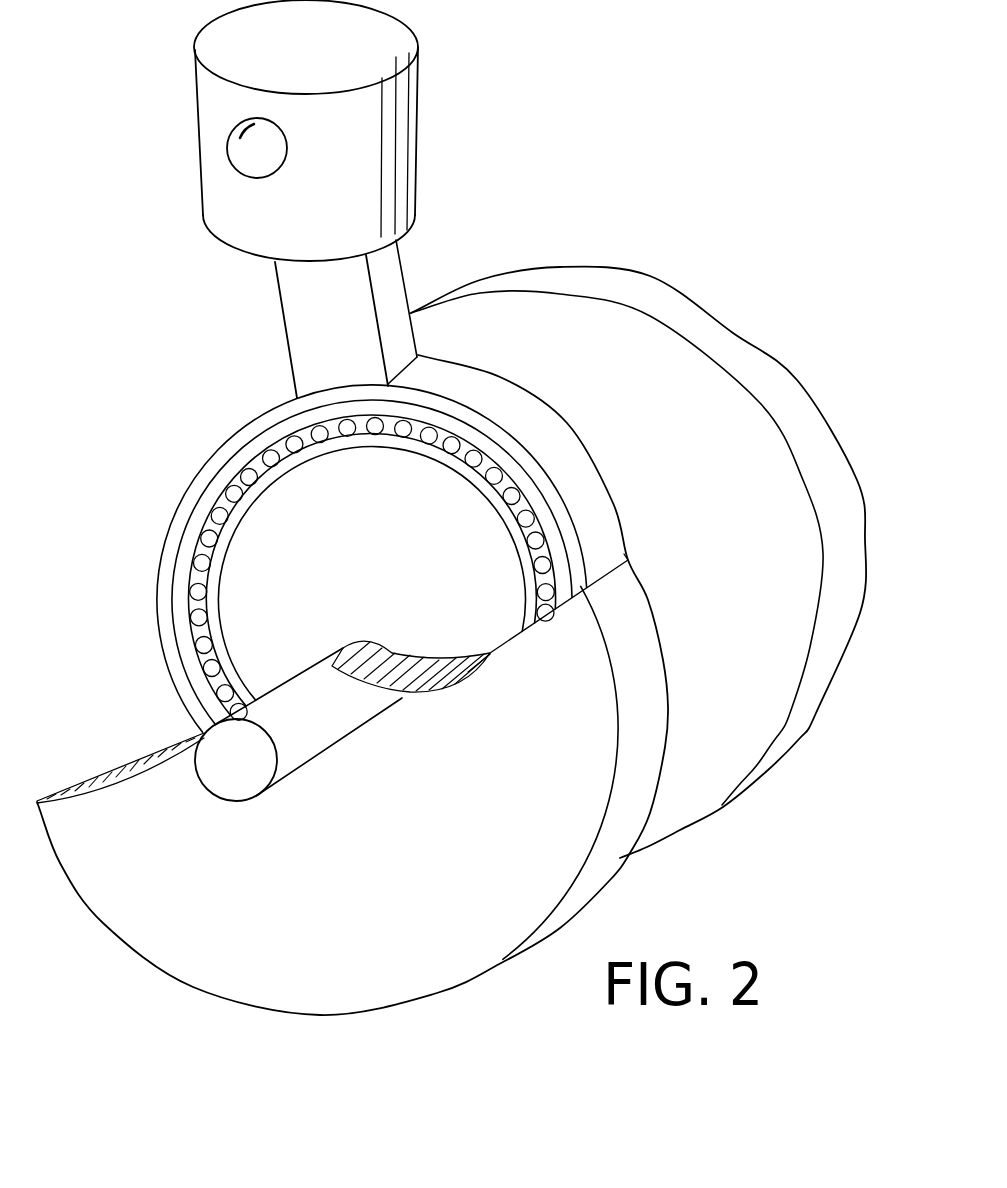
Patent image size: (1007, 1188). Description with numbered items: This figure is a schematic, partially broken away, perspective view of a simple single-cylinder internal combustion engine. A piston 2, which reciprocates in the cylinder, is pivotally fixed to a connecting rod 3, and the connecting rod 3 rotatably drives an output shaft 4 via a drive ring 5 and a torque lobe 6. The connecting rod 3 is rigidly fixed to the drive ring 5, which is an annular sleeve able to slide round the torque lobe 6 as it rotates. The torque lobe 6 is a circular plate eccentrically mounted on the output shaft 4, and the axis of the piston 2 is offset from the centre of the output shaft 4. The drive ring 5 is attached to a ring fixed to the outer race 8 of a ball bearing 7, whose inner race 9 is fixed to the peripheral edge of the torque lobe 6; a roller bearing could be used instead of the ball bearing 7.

The piston 2 is at (284, 54).
The connecting rod 3 is at (318, 344).
The output shaft 4 is at (313, 721).
The drive ring 5 is at (615, 532).
The torque lobe 6 is at (347, 544).
The ball bearing 7 is at (198, 531).
The outer race 8 is at (216, 466).
The inner race 9 is at (195, 596).